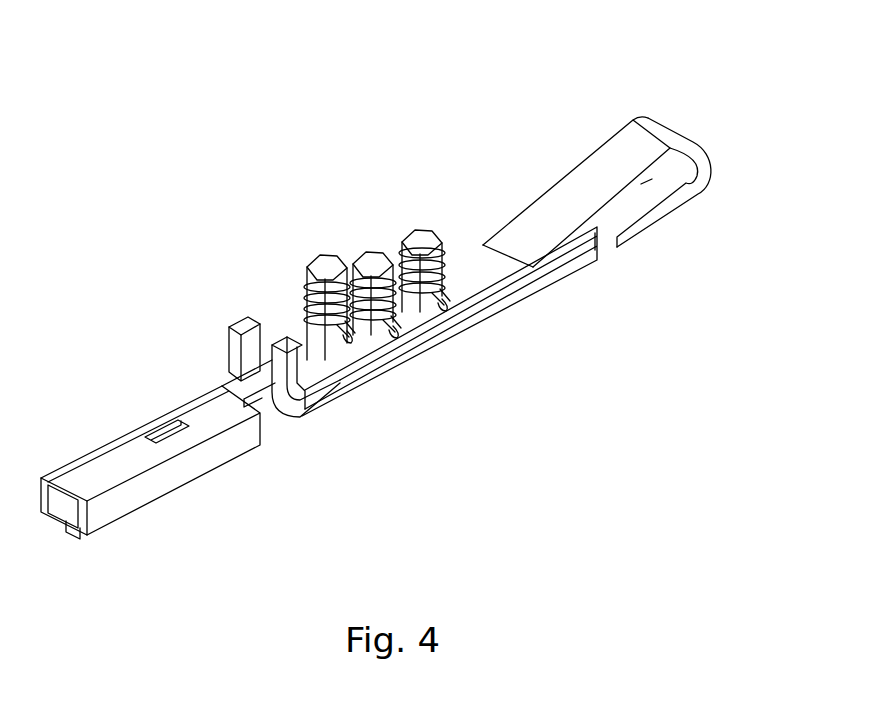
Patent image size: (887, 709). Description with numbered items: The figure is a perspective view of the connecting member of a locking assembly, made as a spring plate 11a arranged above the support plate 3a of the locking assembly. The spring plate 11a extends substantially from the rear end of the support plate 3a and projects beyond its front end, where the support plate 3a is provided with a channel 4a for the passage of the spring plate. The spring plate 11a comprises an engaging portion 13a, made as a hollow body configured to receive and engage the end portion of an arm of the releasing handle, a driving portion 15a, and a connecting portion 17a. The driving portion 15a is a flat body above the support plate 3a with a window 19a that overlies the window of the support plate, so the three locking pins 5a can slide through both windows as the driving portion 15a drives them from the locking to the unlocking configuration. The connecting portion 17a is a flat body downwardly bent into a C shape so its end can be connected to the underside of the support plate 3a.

The support plate 3a is at (503, 308).
The channel 4a is at (228, 360).
The locking pin 5a is at (415, 237).
The spring plate 11a is at (515, 162).
The engaging portion 13a is at (152, 487).
The driving portion 15a is at (473, 262).
The connecting portion 17a is at (677, 133).
The window 19a is at (355, 340).